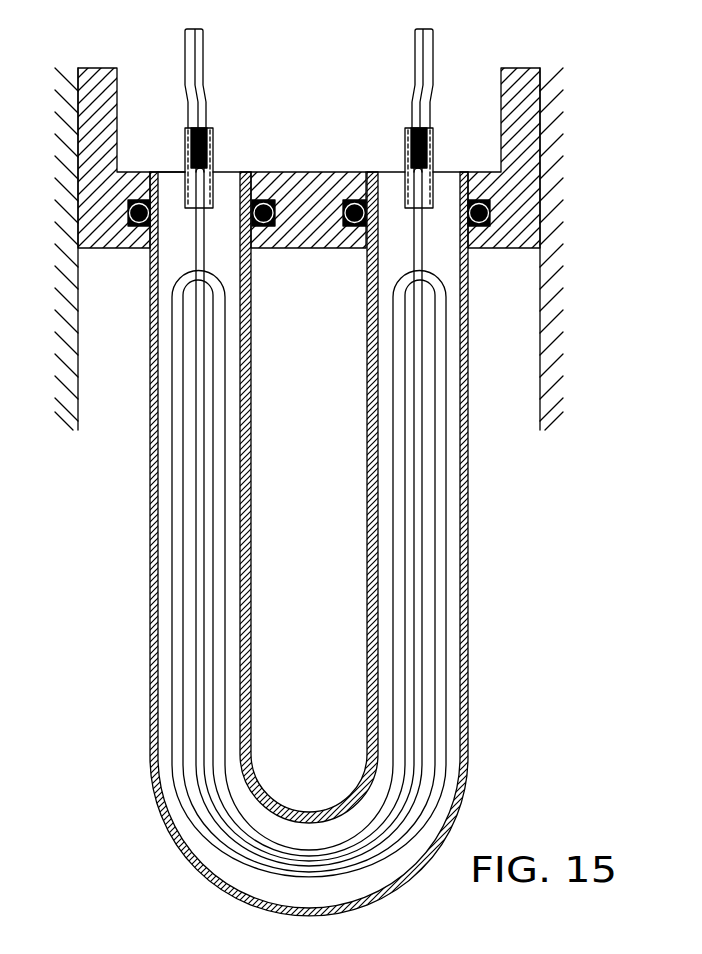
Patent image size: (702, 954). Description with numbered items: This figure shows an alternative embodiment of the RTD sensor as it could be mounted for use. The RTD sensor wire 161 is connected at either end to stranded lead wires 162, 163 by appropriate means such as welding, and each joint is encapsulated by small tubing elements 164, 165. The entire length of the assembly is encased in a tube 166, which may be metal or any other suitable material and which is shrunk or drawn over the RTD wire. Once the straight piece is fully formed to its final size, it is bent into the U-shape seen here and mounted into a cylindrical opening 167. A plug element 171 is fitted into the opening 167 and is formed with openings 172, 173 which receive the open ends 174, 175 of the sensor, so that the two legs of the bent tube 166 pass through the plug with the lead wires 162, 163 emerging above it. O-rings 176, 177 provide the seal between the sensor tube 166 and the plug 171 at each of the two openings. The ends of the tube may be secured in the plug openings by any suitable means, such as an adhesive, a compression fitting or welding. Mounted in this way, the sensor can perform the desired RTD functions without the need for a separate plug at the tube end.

The RTD sensor wire 161 is at (443, 778).
The stranded lead wire 162 is at (190, 52).
The stranded lead wire 163 is at (432, 55).
The small tubing element 164 is at (187, 152).
The small tubing element 165 is at (432, 150).
The tube 166 is at (472, 645).
The cylindrical opening 167 is at (540, 400).
The plug element 171 is at (498, 249).
The opening 172 is at (158, 247).
The opening 173 is at (380, 247).
The open end 174 is at (232, 177).
The open end 175 is at (378, 177).
The O-ring 176 is at (272, 170).
The O-ring 177 is at (344, 170).